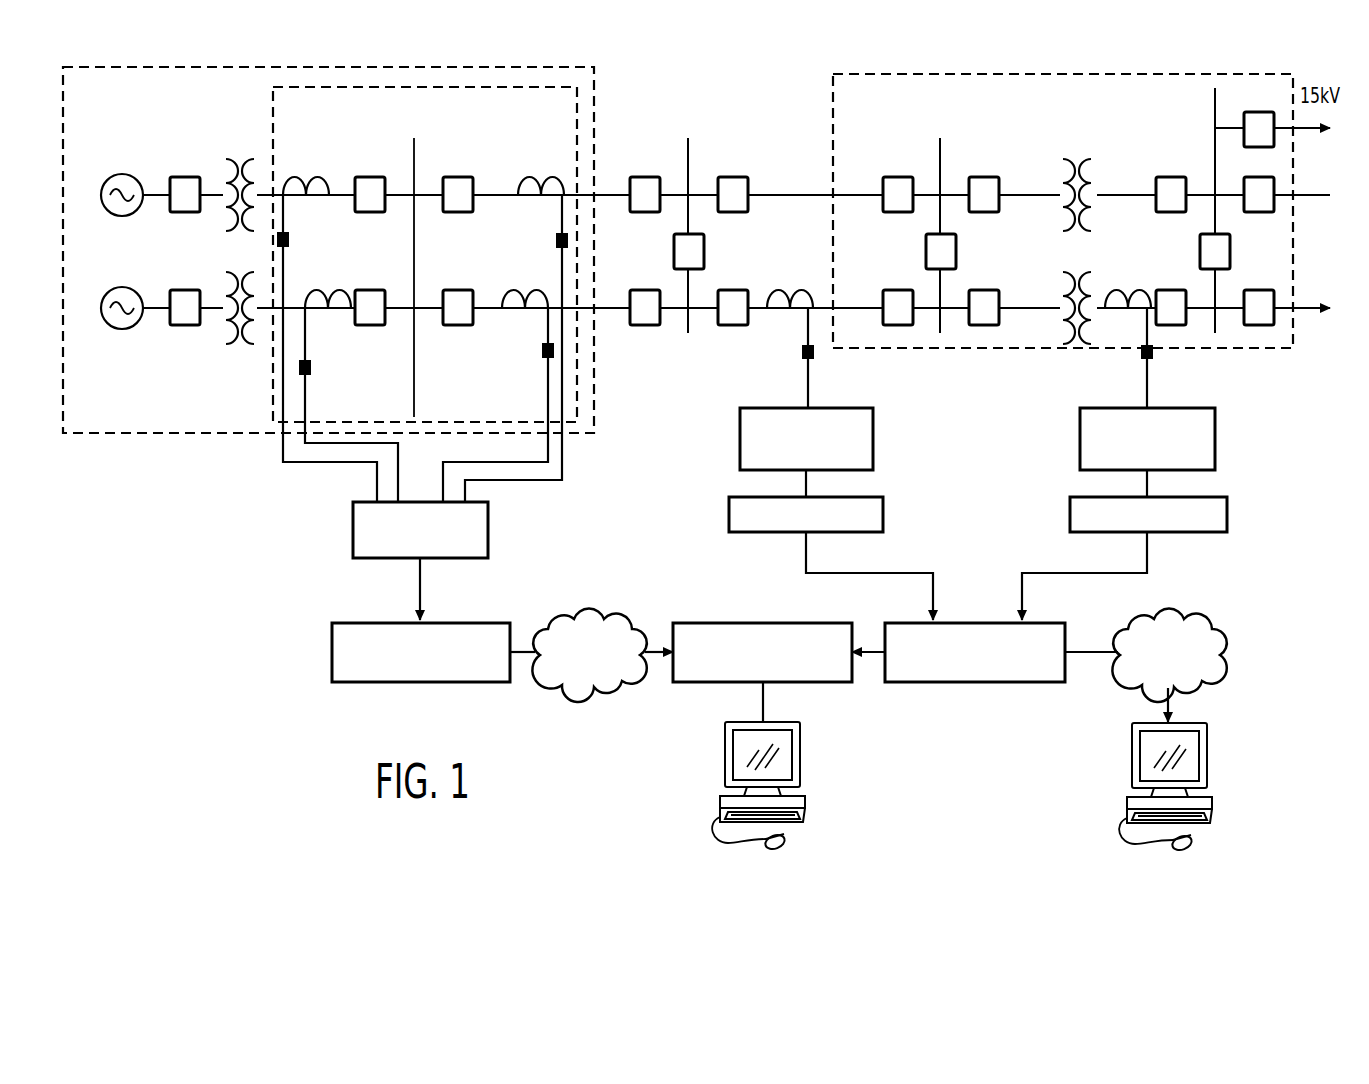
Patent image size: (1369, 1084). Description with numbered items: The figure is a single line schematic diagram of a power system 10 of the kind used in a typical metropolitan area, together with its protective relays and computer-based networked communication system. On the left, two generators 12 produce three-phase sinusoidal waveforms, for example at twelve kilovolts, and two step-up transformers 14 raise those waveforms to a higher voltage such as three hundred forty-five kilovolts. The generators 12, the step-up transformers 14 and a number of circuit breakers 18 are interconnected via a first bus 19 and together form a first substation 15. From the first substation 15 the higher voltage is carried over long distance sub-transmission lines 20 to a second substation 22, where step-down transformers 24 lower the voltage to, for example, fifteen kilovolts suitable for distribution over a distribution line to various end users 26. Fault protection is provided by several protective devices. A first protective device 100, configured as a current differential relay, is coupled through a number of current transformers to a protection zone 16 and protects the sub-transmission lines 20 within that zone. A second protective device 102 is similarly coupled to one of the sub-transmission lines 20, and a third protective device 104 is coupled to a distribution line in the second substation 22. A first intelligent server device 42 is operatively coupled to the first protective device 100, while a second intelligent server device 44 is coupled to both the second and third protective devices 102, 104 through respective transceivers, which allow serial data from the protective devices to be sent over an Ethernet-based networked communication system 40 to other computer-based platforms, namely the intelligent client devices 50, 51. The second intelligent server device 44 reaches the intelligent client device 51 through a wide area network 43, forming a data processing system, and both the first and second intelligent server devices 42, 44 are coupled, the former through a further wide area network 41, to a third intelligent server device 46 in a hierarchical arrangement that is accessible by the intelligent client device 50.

The power system 10 is at (757, 88).
The generators 12 is at (120, 216).
The step-up transformers 14 is at (240, 158).
The first substation 15 is at (305, 67).
The protection zone 16 is at (580, 142).
The circuit breakers 18 is at (458, 213).
The first bus 19 is at (412, 150).
The sub-transmission lines 20 is at (612, 193).
The second substation 22 is at (1118, 73).
The step-down transformers 24 is at (1078, 158).
The end users 26 is at (1305, 133).
The Ethernet-based networked communication system 40 is at (413, 590).
The wide area network 41 is at (588, 612).
The first intelligent server device 42 is at (462, 622).
The wide area network 43 is at (1205, 617).
The second intelligent server device 44 is at (975, 683).
The third intelligent server device 46 is at (772, 622).
The intelligent client device 50 is at (802, 752).
The intelligent client device 51 is at (1207, 754).
The first protective device 100 is at (353, 530).
The second protective device 102 is at (740, 437).
The third protective device 104 is at (1080, 437).